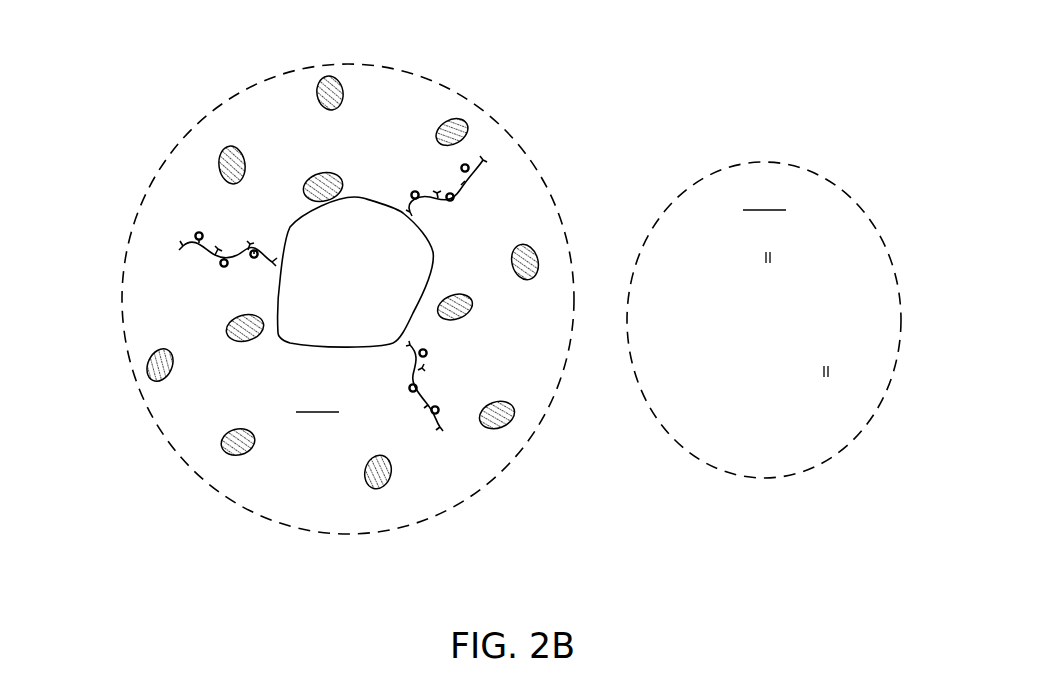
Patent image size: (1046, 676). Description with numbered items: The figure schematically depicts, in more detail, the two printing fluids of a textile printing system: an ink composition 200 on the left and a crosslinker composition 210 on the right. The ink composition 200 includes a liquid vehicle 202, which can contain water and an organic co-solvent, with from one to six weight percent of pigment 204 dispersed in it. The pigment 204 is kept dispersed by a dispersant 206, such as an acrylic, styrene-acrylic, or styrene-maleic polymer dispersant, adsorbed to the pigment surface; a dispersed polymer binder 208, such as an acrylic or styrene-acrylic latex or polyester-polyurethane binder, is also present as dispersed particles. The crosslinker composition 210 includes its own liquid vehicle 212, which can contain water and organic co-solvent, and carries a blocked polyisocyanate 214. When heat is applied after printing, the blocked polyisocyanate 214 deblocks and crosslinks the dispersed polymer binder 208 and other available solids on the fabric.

The ink composition 200 is at (191, 90).
The liquid vehicle 202 is at (317, 400).
The pigment 204 is at (374, 289).
The dispersant 206 is at (176, 230).
The dispersed domains 208 is at (152, 357).
The crosslinker composition 210 is at (830, 162).
The liquid vehicle 212 is at (764, 198).
The blocked polyisocyanate 214 is at (727, 292).